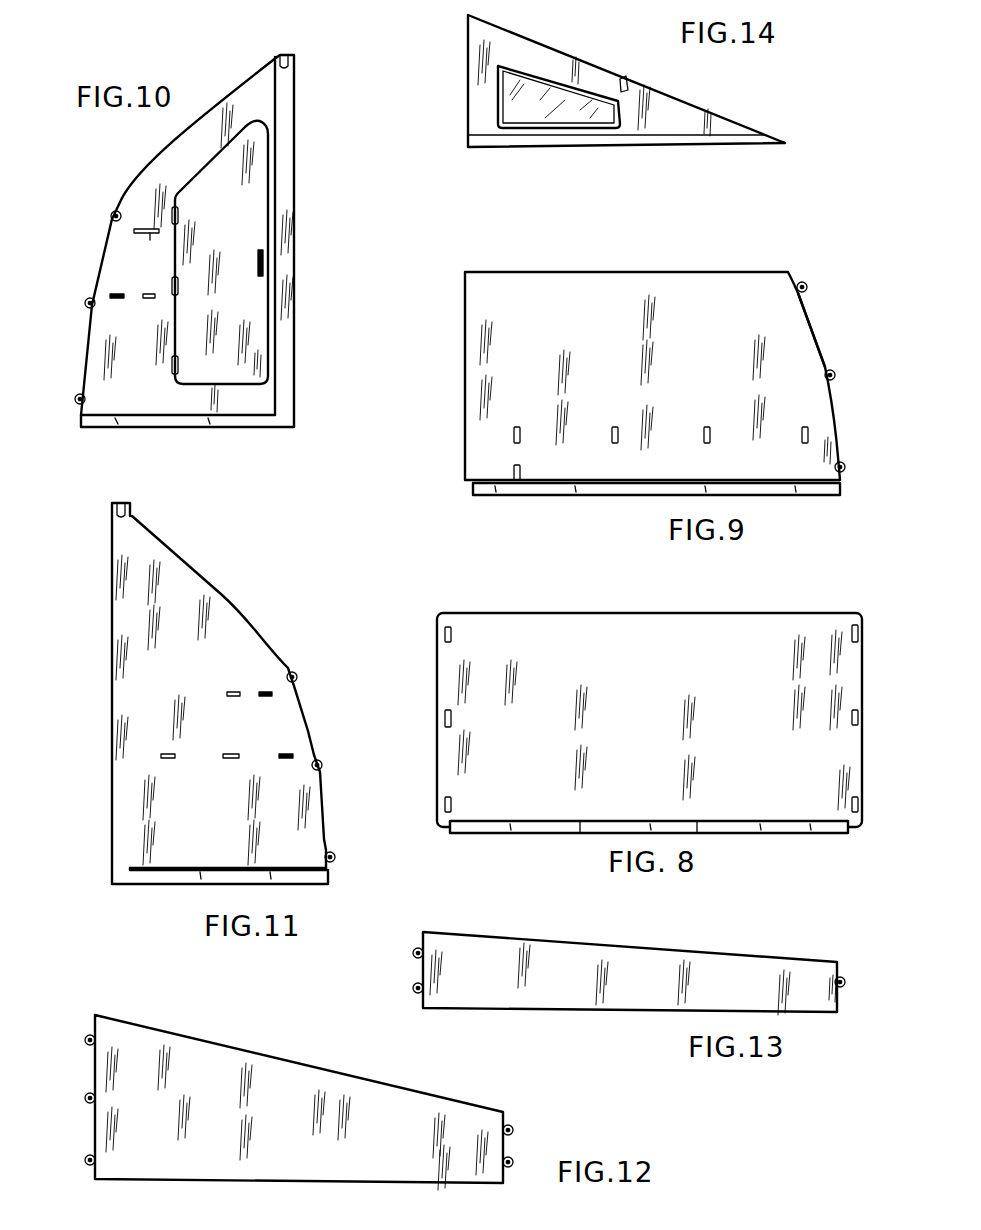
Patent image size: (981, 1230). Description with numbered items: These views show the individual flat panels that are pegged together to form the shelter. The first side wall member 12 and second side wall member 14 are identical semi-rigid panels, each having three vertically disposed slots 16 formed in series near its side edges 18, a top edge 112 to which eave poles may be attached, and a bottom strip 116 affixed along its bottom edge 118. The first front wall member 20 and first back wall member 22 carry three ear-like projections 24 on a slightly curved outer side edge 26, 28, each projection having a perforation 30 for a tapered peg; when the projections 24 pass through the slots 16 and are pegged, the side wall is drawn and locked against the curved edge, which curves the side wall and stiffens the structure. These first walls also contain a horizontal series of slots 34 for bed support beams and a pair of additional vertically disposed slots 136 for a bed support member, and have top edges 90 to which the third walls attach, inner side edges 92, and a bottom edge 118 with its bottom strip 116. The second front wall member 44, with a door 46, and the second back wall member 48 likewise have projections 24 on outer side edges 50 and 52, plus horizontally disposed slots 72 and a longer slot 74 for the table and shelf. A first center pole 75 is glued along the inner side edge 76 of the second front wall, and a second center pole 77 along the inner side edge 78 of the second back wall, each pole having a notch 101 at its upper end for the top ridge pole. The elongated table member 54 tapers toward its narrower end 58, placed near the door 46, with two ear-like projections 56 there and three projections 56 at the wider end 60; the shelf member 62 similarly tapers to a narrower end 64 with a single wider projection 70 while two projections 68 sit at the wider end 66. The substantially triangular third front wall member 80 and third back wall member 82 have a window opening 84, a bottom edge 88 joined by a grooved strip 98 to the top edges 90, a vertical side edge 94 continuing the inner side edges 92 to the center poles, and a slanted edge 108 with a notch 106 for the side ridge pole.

In FIG. 8, the first side wall member 12 is at (649, 705).
In FIG. 8, the second side wall member 14 is at (673, 625).
In FIG. 8, the vertically disposed slots 16 is at (452, 635).
In FIG. 8, the side edges 18 is at (863, 622).
In FIG. 9, the first front wall member 20 is at (652, 360).
In FIG. 9, the first back wall member 22 is at (645, 283).
In FIG. 10, the ear-like projections 24 is at (117, 209).
In FIG. 9, the ear-like projections 24 is at (806, 283).
In FIG. 11, the ear-like projections 24 is at (296, 673).
In FIG. 9, the outer side edge 26 is at (843, 330).
In FIG. 9, the outer side edge 28 is at (813, 332).
In FIG. 10, the perforation 30 is at (111, 216).
In FIG. 9, the perforation 30 is at (808, 289).
In FIG. 11, the perforation 30 is at (297, 680).
In FIG. 13, the perforation 30 is at (415, 950).
In FIG. 12, the perforation 30 is at (86, 1040).
In FIG. 9, the slots 34 is at (614, 427).
In FIG. 10, the second front wall member 44 is at (224, 108).
In FIG. 10, the door 46 is at (216, 158).
In FIG. 11, the second back wall member 48 is at (234, 638).
In FIG. 10, the outer side edge 50 is at (109, 245).
In FIG. 11, the outer side edge 52 is at (304, 731).
In FIG. 12, the table member 54 is at (288, 1077).
In FIG. 12, the ear-like projections 56 is at (90, 1035).
In FIG. 12, the narrower end 58 is at (473, 1120).
In FIG. 12, the wider end 60 is at (107, 1028).
In FIG. 13, the shelf member 62 is at (577, 950).
In FIG. 13, the narrower end 64 is at (813, 965).
In FIG. 13, the wider end 66 is at (457, 997).
In FIG. 13, the ear-like projections 68 is at (417, 980).
In FIG. 13, the projection 70 is at (845, 972).
In FIG. 10, the slots 72 is at (147, 299).
In FIG. 11, the slots 72 is at (265, 692).
In FIG. 10, the slot 74 is at (144, 234).
In FIG. 10, the first center pole 75 is at (289, 119).
In FIG. 10, the inner side edge 76 is at (277, 92).
In FIG. 11, the second center pole 77 is at (116, 546).
In FIG. 11, the inner side edge 78 is at (132, 701).
In FIG. 14, the third front wall member 80 is at (626, 75).
In FIG. 14, the third back wall member 82 is at (518, 45).
In FIG. 14, the window opening 84 is at (568, 115).
In FIG. 14, the bottom edges 88 is at (648, 135).
In FIG. 9, the top edges 90 is at (573, 272).
In FIG. 9, the inner side edges 92 is at (465, 393).
In FIG. 14, the vertical side edges 94 is at (467, 82).
In FIG. 14, the strip 98 is at (723, 142).
In FIG. 10, the notches 101 is at (282, 56).
In FIG. 11, the notches 101 is at (121, 512).
In FIG. 14, the notches 106 is at (627, 74).
In FIG. 14, the slanted edges 108 is at (705, 100).
In FIG. 8, the top edge 112 is at (555, 613).
In FIG. 10, the bottom strips 116 is at (240, 428).
In FIG. 9, the bottom strips 116 is at (620, 489).
In FIG. 11, the bottom strips 116 is at (308, 878).
In FIG. 8, the bottom strips 116 is at (772, 833).
In FIG. 10, the bottom edges 118 is at (158, 416).
In FIG. 9, the bottom edges 118 is at (555, 481).
In FIG. 11, the bottom edges 118 is at (180, 869).
In FIG. 8, the bottom edges 118 is at (538, 822).
In FIG. 9, the vertically disposed slots 136 is at (516, 468).